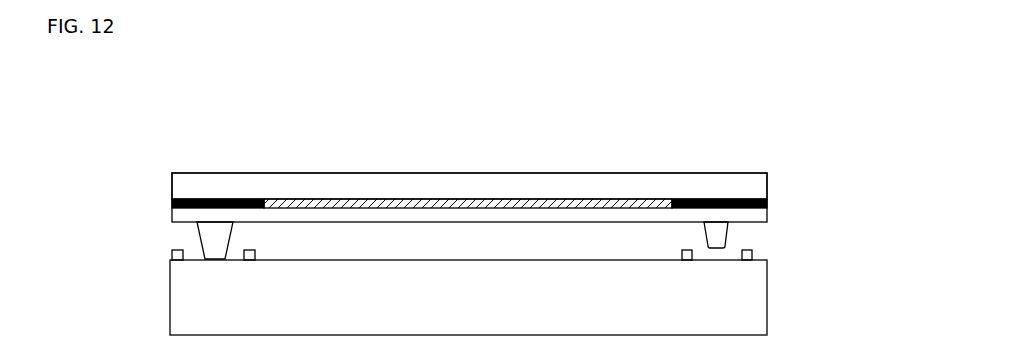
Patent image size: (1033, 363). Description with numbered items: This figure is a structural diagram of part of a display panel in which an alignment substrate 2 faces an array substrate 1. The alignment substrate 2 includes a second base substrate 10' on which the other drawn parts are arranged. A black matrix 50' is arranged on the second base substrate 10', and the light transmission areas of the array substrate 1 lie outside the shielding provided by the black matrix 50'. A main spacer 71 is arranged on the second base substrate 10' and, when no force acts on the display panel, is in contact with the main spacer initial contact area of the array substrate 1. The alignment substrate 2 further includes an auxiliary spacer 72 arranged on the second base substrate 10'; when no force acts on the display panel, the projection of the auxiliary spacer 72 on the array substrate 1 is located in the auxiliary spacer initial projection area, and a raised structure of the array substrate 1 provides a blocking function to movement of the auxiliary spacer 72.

The alignment substrate 2 is at (602, 173).
The second base substrate 10' is at (507, 187).
The black matrix 50' is at (423, 194).
The main spacer 71 is at (219, 236).
The auxiliary spacer 72 is at (717, 230).
The array substrate 1 is at (767, 325).